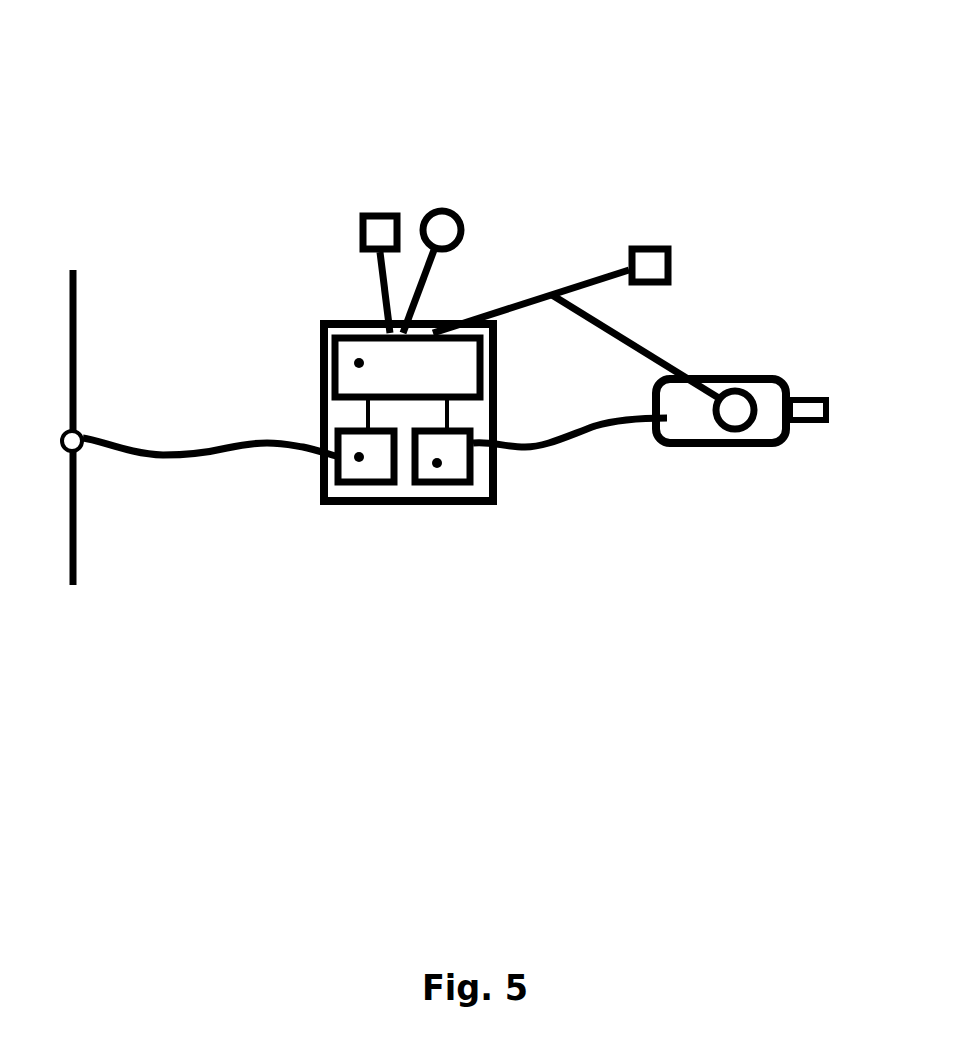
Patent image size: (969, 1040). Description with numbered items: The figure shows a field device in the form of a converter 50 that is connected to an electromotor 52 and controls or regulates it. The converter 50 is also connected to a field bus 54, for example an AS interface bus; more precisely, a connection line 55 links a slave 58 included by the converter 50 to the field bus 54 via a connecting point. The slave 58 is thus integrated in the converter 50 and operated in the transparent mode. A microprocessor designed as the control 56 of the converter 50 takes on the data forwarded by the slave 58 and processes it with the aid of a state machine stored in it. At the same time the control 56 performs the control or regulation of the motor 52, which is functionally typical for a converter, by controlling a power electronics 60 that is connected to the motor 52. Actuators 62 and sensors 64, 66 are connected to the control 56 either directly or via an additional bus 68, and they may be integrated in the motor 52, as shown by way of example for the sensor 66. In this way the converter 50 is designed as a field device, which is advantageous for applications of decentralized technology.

The converter 50 is at (470, 528).
The electromotor 52 is at (714, 470).
The field bus 54 is at (72, 598).
The connection line 55 is at (88, 420).
The control 56 is at (359, 363).
The slave 58 is at (359, 457).
The power electronics 60 is at (437, 463).
The actuators 62 is at (377, 228).
The sensor 64 is at (444, 222).
The sensor 66 is at (737, 410).
The additional bus 68 is at (572, 270).